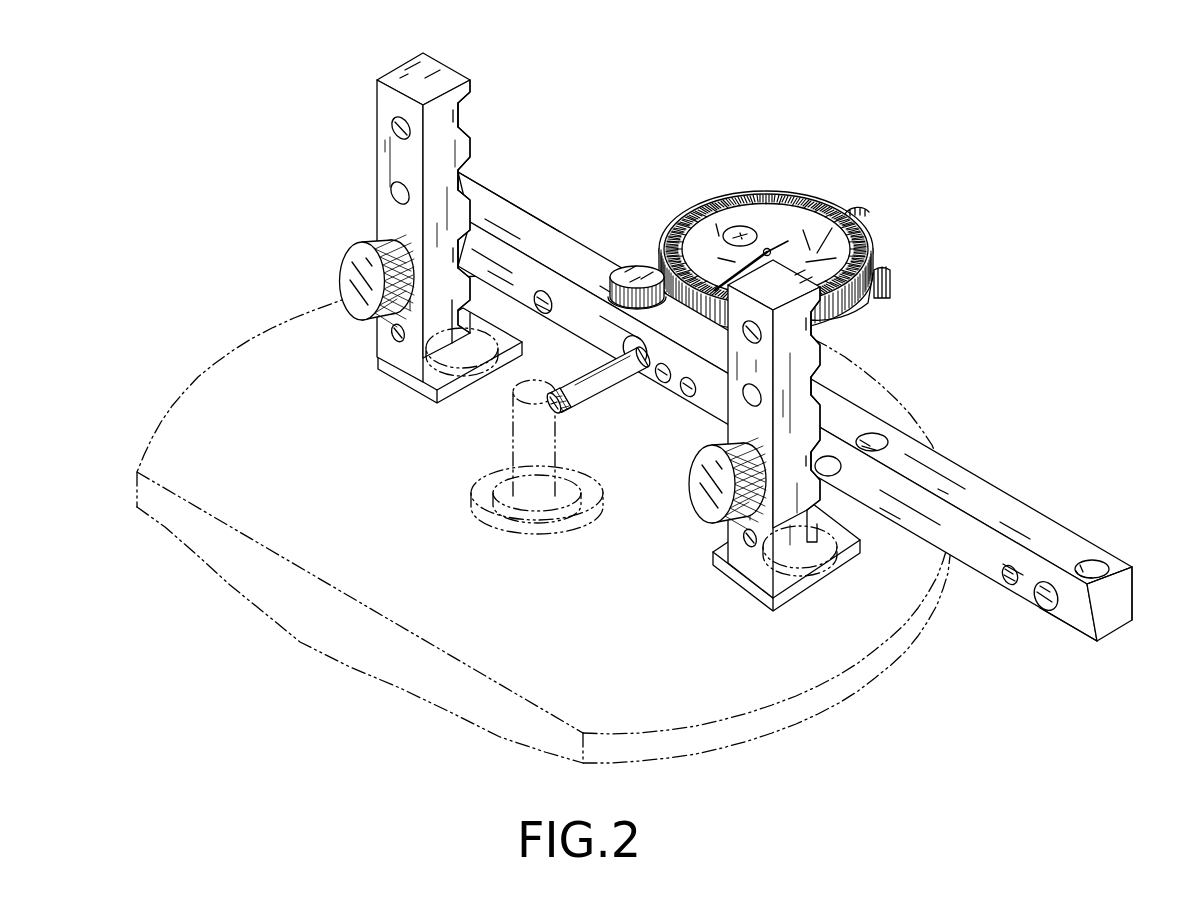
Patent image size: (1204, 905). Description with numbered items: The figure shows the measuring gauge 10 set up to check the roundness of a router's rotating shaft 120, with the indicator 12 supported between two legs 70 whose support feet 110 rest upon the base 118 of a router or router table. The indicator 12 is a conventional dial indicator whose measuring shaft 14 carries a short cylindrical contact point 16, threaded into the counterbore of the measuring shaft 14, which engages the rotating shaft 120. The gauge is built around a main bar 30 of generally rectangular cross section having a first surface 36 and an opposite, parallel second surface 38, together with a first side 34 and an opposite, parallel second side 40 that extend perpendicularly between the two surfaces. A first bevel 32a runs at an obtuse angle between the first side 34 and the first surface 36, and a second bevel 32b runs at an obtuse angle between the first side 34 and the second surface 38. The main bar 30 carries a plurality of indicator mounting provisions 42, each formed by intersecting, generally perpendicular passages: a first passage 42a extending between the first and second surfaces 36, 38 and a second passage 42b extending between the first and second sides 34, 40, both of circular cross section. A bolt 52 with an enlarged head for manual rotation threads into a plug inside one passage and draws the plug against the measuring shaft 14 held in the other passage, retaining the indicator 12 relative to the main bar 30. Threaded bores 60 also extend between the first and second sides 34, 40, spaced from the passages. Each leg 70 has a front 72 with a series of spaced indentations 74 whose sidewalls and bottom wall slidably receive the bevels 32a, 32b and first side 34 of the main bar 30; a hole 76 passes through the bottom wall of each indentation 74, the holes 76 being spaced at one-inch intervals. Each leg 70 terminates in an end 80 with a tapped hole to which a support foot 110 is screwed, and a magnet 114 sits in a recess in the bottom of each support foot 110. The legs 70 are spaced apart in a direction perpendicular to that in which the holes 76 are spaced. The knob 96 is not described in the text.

The measuring gauge 10 is at (995, 296).
The indicator 12 is at (813, 192).
The measuring shaft 14 is at (597, 393).
The short cylindrical contact point 16 is at (560, 412).
The main bar 30 is at (822, 458).
The first bevel 32a is at (508, 246).
The second bevel 32b is at (1088, 637).
The first side 34 is at (1068, 618).
The first surface 36 is at (548, 246).
The second surface 38 is at (1120, 627).
The second side 40 is at (1133, 592).
The indicator mounting provision 42 is at (624, 256).
The first passage 42a is at (1087, 566).
The second passage 42b is at (632, 345).
The bolt 52 is at (637, 270).
The threaded bore 60 is at (663, 378).
The leg 70 is at (377, 209).
The front 72 is at (468, 147).
The indentation 74 is at (460, 118).
The hole 76 is at (394, 188).
The end 80 is at (386, 372).
The clamp knob 96 is at (352, 269).
The support foot 110 is at (422, 400).
The magnet 114 is at (462, 368).
The base 118 is at (792, 715).
The rotating shaft 120 is at (510, 452).